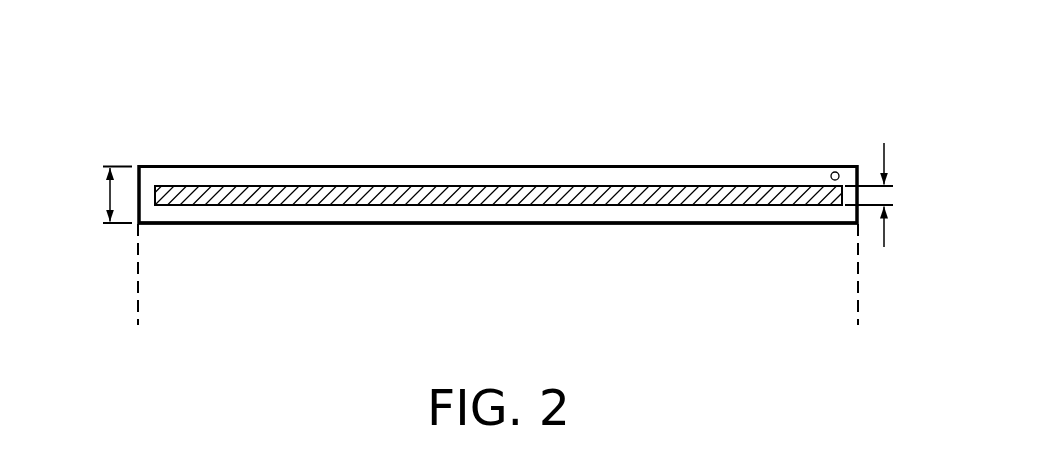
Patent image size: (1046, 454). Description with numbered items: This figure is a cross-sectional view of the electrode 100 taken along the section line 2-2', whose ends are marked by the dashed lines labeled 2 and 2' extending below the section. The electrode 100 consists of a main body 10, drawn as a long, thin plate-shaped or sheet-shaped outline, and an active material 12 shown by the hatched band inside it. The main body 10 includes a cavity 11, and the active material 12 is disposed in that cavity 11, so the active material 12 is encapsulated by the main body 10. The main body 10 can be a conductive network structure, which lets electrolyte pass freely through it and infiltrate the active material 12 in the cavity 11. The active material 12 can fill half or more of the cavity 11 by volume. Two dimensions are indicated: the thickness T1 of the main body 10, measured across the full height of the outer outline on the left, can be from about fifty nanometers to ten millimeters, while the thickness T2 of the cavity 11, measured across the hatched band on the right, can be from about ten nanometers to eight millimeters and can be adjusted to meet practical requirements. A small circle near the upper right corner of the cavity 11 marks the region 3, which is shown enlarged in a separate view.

The electrode 100 is at (905, 55).
The main body 10 is at (357, 166).
The cavity 11 is at (542, 186).
The active material 12 is at (357, 205).
The region 3 is at (839, 173).
The line 2-2' 2 is at (138, 294).
The line 2- 2' is at (861, 294).
The thickness of the main body T1 is at (98, 195).
The thickness of the cavity T2 is at (888, 195).